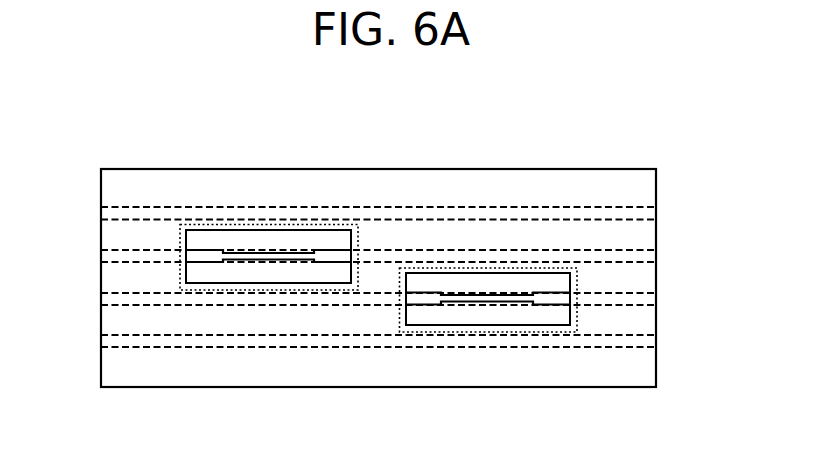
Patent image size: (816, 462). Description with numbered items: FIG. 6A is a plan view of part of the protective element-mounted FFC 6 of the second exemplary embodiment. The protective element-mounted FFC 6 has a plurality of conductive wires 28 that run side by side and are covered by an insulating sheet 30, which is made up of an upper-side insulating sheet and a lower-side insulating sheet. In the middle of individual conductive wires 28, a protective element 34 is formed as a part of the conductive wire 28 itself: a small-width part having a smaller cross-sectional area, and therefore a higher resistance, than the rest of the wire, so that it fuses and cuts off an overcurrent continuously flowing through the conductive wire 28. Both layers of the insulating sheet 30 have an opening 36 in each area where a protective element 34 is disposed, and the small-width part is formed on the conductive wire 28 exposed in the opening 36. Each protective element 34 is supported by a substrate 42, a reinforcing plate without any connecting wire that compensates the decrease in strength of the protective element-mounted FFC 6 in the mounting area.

The protective element-mounted FFC 6 is at (392, 430).
The conductive wire 28 is at (627, 220).
The insulating sheet 30 is at (628, 181).
The protective element 34 is at (487, 303).
The opening 36 is at (537, 274).
The substrate 42 is at (577, 315).